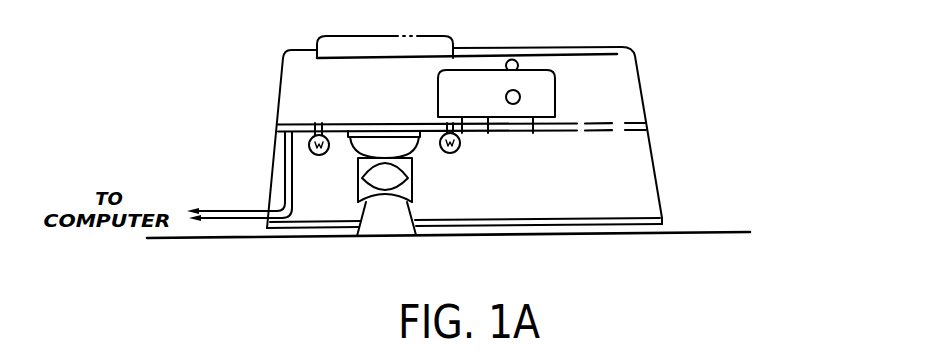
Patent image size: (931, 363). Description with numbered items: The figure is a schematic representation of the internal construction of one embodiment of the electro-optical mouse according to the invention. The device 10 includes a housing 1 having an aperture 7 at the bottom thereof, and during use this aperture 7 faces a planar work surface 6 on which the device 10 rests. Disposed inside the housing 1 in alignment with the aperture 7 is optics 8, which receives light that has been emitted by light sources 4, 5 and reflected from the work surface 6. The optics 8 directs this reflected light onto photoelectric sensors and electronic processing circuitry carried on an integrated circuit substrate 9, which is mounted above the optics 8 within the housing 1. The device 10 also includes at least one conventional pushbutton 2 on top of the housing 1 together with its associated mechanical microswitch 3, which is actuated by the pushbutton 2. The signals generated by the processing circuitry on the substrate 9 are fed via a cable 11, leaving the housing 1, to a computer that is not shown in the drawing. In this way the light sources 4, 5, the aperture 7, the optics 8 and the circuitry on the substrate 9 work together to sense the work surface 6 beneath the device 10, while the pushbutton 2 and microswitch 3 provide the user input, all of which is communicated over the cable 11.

The housing 1 is at (280, 91).
The pushbutton 2 is at (433, 46).
The mechanical microswitch 3 is at (547, 82).
The light source 4 is at (312, 154).
The light source 5 is at (460, 150).
The planar work surface 6 is at (496, 233).
The aperture 7 is at (393, 223).
The optics 8 is at (416, 193).
The integrated circuit substrate 9 is at (421, 133).
The device 10 is at (472, 140).
The cable 11 is at (227, 211).